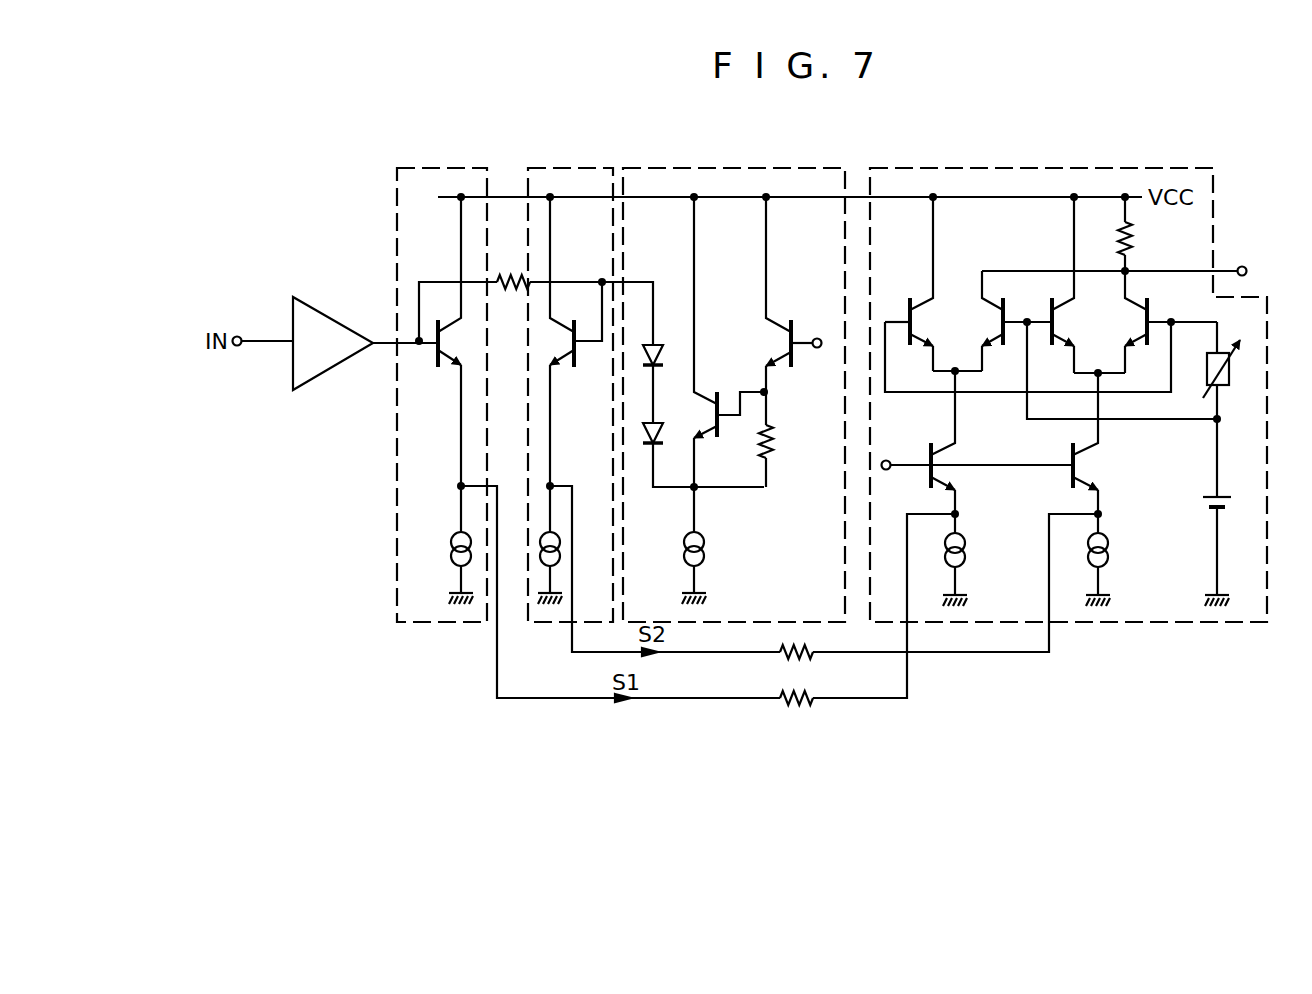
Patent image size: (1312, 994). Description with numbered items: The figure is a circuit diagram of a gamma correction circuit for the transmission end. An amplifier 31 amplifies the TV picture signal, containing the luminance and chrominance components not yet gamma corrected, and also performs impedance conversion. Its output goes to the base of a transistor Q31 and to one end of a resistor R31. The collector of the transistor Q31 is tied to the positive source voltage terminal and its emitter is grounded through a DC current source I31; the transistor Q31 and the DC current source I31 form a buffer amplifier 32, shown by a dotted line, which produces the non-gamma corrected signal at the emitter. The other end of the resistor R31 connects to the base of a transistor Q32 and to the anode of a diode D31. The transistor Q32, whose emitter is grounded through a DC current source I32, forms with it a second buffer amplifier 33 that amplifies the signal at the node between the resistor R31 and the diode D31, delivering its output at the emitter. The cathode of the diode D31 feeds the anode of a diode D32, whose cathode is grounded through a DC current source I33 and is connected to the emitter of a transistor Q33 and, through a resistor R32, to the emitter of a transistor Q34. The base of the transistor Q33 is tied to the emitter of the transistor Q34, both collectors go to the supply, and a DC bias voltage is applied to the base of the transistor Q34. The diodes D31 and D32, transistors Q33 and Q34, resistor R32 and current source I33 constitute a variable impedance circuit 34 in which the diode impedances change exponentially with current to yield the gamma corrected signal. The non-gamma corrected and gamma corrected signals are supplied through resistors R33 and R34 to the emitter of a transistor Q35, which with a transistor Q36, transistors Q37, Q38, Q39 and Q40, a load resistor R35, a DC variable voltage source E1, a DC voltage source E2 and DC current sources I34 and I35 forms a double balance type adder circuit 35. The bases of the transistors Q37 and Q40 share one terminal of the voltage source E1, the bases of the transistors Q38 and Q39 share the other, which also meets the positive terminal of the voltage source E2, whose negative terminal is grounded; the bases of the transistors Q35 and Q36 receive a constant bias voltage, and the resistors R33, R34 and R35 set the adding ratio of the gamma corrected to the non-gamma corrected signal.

The amplifier 31 is at (323, 372).
The buffer amplifier 32 is at (463, 167).
The buffer amplifier 33 is at (597, 167).
The variable impedance circuit 34 is at (800, 167).
The double balance type adder circuit 35 is at (1132, 167).
The transistor Q31 is at (445, 372).
The transistor Q32 is at (565, 372).
The transistor Q33 is at (707, 408).
The transistor Q34 is at (778, 347).
The transistor Q35 is at (938, 462).
The transistor Q36 is at (1080, 465).
The transistor Q37 is at (916, 318).
The transistor Q38 is at (992, 328).
The transistor Q39 is at (1058, 318).
The transistor Q40 is at (1134, 328).
The resistor R31 is at (507, 276).
The resistor R32 is at (774, 440).
The resistor R33 is at (793, 705).
The resistor R34 is at (805, 658).
The load resistor R35 is at (1131, 232).
The diode D31 is at (655, 345).
The diode D32 is at (645, 448).
The DC current source I31 is at (450, 549).
The DC current source I32 is at (561, 548).
The DC current source I33 is at (705, 545).
The DC current source I34 is at (966, 545).
The DC current source I35 is at (1109, 545).
The DC variable voltage source E1 is at (1230, 386).
The DC voltage source E2 is at (1203, 504).